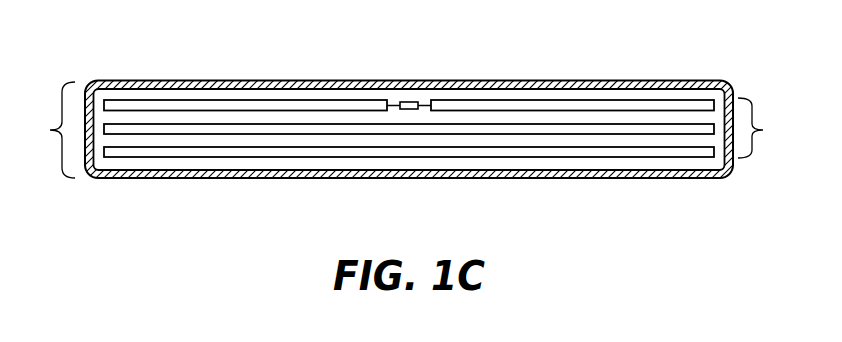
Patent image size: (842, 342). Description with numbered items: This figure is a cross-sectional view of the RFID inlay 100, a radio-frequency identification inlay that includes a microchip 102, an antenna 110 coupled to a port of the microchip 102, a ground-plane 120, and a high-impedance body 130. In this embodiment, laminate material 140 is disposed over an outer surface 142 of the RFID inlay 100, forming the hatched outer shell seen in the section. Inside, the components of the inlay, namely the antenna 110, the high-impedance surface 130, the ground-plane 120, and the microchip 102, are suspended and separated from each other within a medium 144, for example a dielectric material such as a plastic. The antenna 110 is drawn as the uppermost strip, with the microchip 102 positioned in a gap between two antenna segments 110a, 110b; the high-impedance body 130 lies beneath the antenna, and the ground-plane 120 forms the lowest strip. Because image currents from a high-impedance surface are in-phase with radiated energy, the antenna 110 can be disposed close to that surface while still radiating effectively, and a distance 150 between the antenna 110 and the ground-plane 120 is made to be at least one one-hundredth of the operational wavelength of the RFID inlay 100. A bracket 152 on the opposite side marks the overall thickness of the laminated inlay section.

The RFID inlay 100 is at (208, 37).
The microchip 102 is at (410, 100).
The antenna 110 is at (593, 100).
The first portion of first layer 110a is at (293, 103).
The second portion of first layer 110b is at (517, 105).
The ground-plane 120 is at (660, 152).
The high-impedance body 130 is at (660, 130).
The laminate material 140 is at (418, 178).
The outer surface 142 is at (505, 168).
The medium 144 is at (583, 162).
The distance 150 is at (770, 128).
The housing height 152 is at (43, 130).